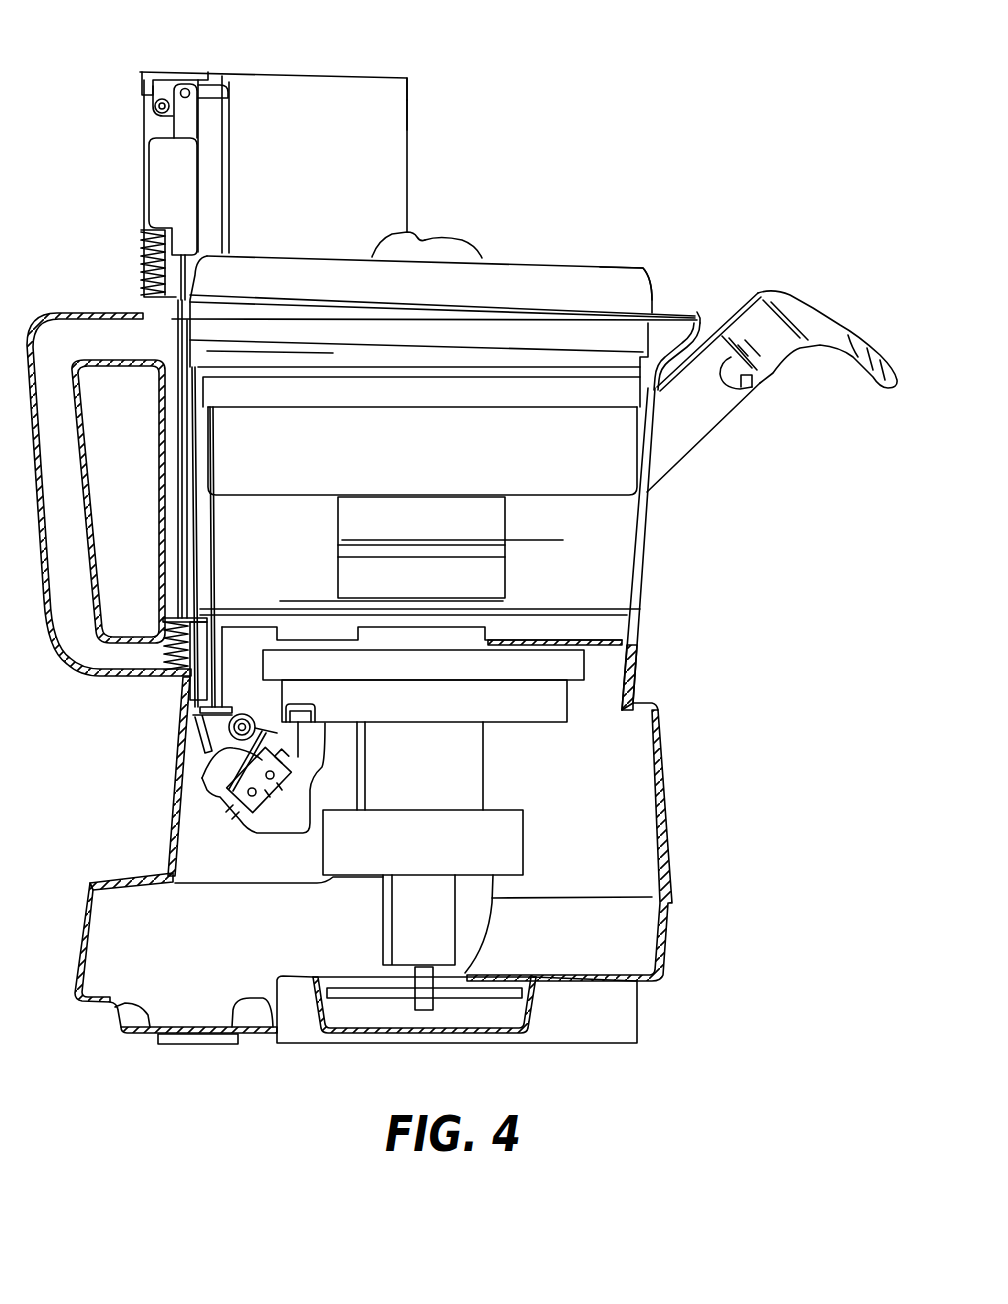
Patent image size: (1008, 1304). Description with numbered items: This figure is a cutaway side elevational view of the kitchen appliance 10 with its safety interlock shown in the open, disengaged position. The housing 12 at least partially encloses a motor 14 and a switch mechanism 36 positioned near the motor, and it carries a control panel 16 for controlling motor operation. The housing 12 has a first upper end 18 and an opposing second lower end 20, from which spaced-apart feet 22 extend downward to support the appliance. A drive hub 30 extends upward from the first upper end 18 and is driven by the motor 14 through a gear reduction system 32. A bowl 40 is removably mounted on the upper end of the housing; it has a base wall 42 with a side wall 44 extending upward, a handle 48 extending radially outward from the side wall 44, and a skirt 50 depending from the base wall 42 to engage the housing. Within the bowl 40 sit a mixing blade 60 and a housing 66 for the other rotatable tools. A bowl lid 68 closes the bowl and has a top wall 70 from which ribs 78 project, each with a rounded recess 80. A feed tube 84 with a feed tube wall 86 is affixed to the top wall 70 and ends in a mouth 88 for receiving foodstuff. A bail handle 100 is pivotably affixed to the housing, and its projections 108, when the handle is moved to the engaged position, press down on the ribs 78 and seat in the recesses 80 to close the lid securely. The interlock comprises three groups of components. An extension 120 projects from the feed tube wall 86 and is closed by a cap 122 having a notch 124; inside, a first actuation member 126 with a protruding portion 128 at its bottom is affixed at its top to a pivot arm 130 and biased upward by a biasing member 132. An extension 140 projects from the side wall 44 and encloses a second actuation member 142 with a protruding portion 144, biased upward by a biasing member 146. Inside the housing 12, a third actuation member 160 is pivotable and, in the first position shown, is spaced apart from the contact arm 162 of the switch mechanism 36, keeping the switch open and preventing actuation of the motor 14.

The kitchen appliance 10 is at (709, 101).
The housing 12 is at (676, 851).
The motor 14 is at (530, 825).
The control panel 16 is at (107, 877).
The first upper end 18 is at (610, 638).
The second lower end 20 is at (137, 1037).
The feet 22 is at (205, 1043).
The drive hub 30 is at (467, 630).
The gear reduction system 32 is at (550, 705).
The switch mechanism 36 is at (247, 830).
The bowl 40 is at (640, 548).
The base wall 42 is at (513, 610).
The side wall 44 is at (648, 503).
The handle 48 is at (37, 320).
The skirt 50 is at (637, 664).
The mixing blade 60 is at (510, 533).
The housing 66 is at (613, 443).
The bowl lid 68 is at (653, 272).
The top wall 70 is at (551, 256).
The ribs 78 is at (397, 242).
The recess 80 is at (428, 242).
The feed tube 84 is at (407, 86).
The feed tube wall 86 is at (390, 117).
The mouth 88 is at (354, 68).
The bail handle 100 is at (763, 293).
The projections 108 is at (740, 386).
The extension 120 is at (147, 123).
The cap 122 is at (143, 72).
The notch 124 is at (220, 80).
The first actuation member 126 is at (157, 177).
The protruding portion 128 is at (177, 302).
The pivot arm 130 is at (208, 90).
The biasing member 132 is at (141, 247).
The extension 140 is at (167, 493).
The second actuation member 142 is at (180, 573).
The protruding portion 144 is at (197, 688).
The biasing member 146 is at (167, 658).
The third actuation member 160 is at (200, 738).
The contact arm 162 is at (227, 785).